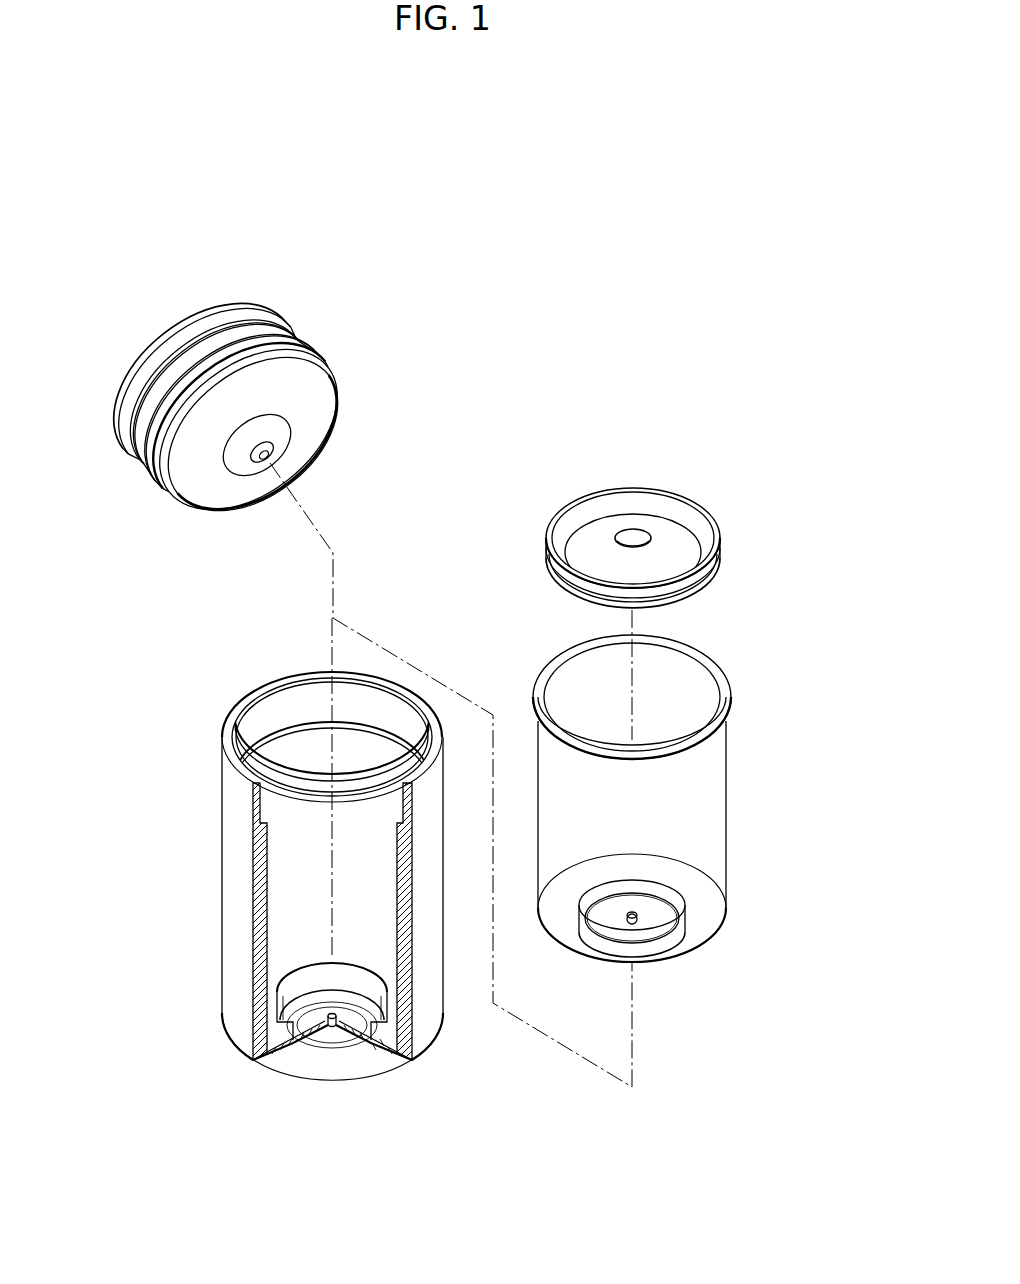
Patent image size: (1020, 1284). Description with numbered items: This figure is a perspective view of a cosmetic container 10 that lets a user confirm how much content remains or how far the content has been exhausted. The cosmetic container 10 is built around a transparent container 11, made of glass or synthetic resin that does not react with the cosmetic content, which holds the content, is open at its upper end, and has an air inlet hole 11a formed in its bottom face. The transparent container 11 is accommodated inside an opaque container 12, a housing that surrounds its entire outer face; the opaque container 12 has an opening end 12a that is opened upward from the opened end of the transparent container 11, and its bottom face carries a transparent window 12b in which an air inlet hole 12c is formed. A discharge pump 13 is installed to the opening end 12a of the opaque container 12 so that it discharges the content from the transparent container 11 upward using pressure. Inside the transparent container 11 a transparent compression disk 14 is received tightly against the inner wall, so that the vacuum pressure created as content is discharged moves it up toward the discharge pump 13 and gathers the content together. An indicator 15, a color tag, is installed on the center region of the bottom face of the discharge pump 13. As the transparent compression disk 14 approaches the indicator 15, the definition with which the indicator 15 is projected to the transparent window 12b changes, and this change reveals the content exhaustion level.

The cosmetic container 10 is at (608, 410).
The transparent container 11 is at (548, 747).
The air inlet hole 11a is at (628, 918).
The opaque container 12 is at (235, 862).
The opening end 12a is at (272, 710).
The transparent window 12b is at (325, 1038).
The air inlet hole 12c is at (335, 1027).
The discharge pump 13 is at (208, 497).
The transparent compression disk 14 is at (560, 512).
The indicator 15 is at (284, 433).